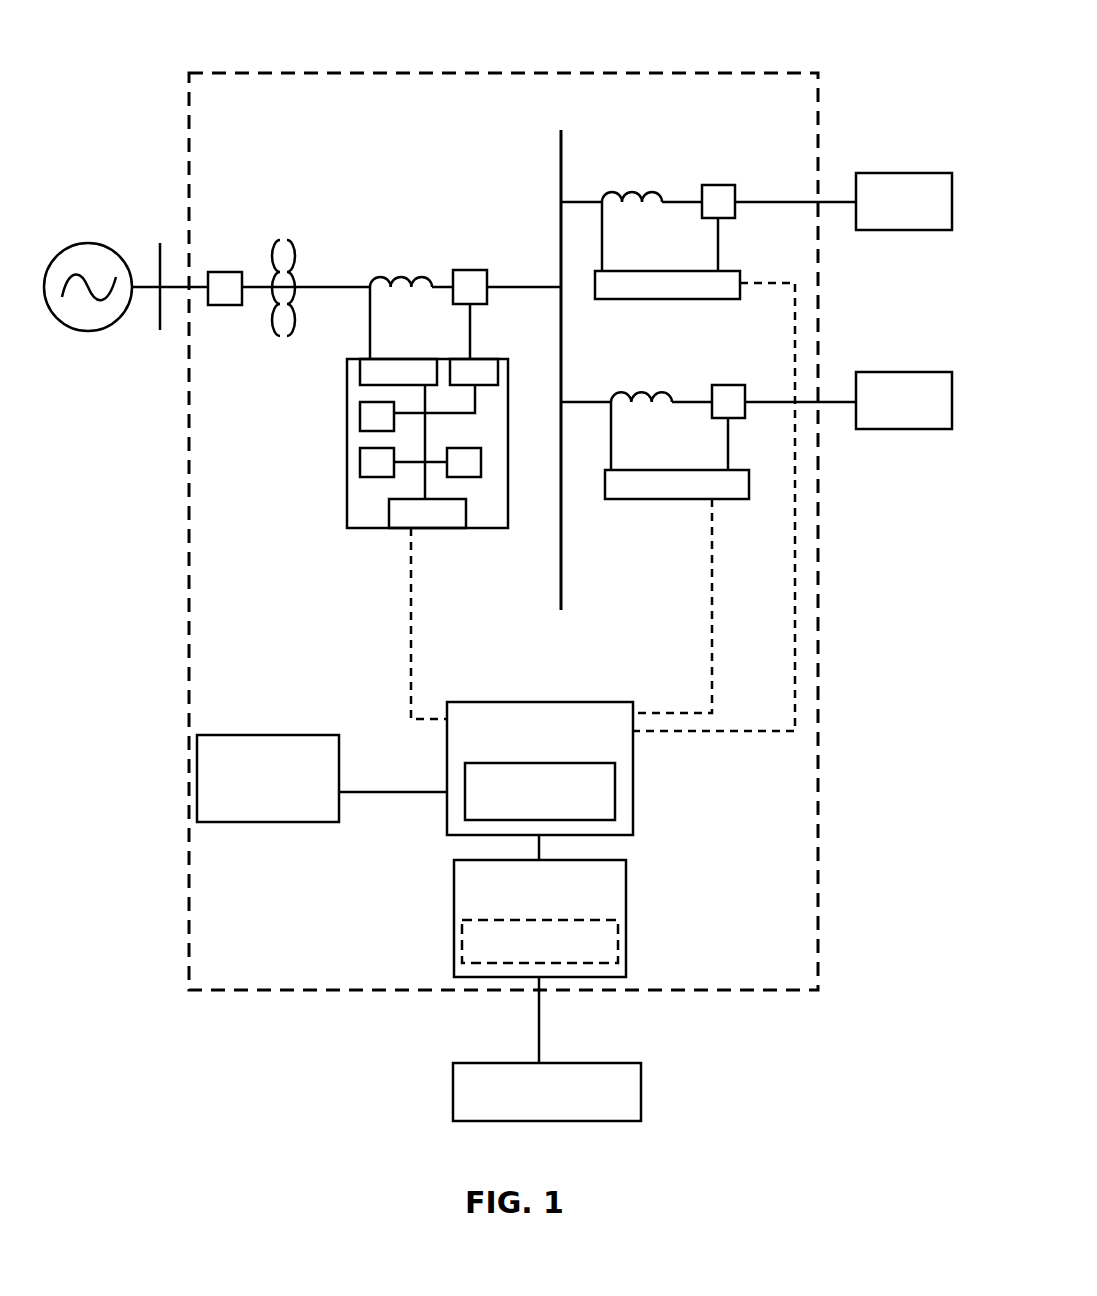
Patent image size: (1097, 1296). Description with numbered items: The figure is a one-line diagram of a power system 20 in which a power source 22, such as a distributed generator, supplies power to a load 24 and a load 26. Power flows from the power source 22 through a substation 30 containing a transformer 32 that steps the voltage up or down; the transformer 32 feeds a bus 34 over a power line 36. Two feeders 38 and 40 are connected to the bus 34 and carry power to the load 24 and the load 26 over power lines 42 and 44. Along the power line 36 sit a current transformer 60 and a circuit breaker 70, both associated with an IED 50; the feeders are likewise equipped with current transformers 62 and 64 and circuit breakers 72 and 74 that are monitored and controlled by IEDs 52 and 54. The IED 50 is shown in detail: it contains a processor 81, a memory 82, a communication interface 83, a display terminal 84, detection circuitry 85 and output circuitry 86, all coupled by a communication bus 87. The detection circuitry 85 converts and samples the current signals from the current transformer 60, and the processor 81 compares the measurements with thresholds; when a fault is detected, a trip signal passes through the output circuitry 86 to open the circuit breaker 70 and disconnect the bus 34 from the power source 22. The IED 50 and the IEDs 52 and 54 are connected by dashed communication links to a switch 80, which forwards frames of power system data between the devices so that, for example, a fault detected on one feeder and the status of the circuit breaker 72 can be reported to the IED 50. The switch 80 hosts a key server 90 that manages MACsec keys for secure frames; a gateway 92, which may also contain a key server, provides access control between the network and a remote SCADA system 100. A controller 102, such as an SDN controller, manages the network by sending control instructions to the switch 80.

The power system 20 is at (809, 42).
The power source 22 is at (89, 243).
The load 24 is at (901, 173).
The load 26 is at (900, 372).
The substation 30 is at (189, 598).
The transformer 32 is at (283, 240).
The bus 34 is at (561, 598).
The power line 36 is at (530, 287).
The feeder 38 is at (760, 421).
The feeder 40 is at (763, 512).
The power line 42 is at (772, 202).
The power line 44 is at (770, 402).
The IED 50 is at (427, 445).
The IED 52 is at (673, 299).
The IED 54 is at (673, 499).
The current transformer 60 is at (390, 278).
The current transformer 62 is at (608, 195).
The current transformer 64 is at (615, 395).
The circuit breaker 70 is at (466, 270).
The circuit breaker 72 is at (714, 185).
The circuit breaker 74 is at (724, 385).
The switch 80 is at (520, 739).
The processor 81 is at (360, 420).
The memory 82 is at (481, 465).
The communication interface 83 is at (455, 528).
The display terminal 84 is at (360, 466).
The detection circuitry 85 is at (405, 359).
The output circuitry 86 is at (498, 373).
The communication bus 87 is at (477, 403).
The key server 90 is at (465, 786).
The gateway 92 is at (454, 910).
The SCADA system 100 is at (453, 1075).
The controller 102 is at (197, 763).